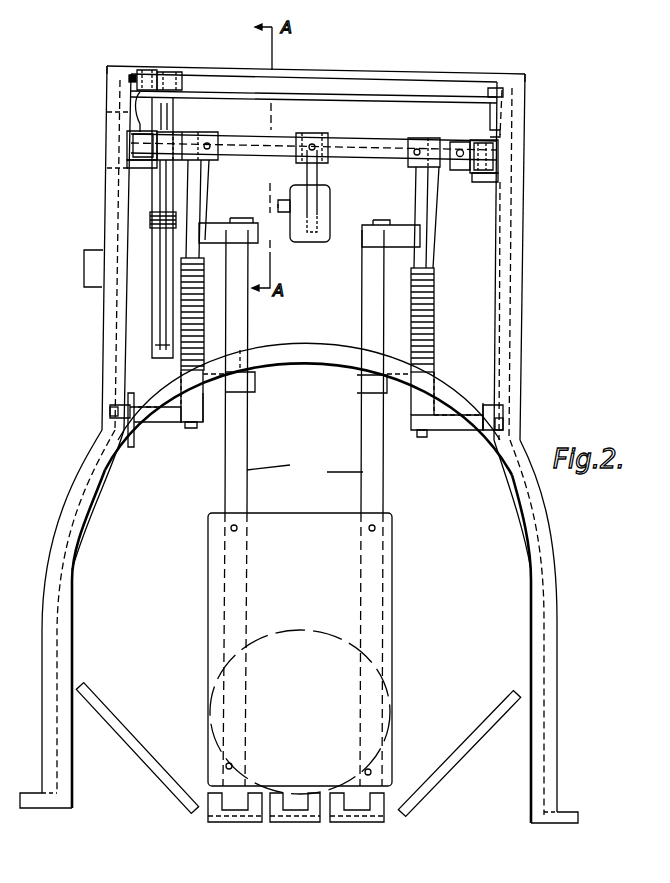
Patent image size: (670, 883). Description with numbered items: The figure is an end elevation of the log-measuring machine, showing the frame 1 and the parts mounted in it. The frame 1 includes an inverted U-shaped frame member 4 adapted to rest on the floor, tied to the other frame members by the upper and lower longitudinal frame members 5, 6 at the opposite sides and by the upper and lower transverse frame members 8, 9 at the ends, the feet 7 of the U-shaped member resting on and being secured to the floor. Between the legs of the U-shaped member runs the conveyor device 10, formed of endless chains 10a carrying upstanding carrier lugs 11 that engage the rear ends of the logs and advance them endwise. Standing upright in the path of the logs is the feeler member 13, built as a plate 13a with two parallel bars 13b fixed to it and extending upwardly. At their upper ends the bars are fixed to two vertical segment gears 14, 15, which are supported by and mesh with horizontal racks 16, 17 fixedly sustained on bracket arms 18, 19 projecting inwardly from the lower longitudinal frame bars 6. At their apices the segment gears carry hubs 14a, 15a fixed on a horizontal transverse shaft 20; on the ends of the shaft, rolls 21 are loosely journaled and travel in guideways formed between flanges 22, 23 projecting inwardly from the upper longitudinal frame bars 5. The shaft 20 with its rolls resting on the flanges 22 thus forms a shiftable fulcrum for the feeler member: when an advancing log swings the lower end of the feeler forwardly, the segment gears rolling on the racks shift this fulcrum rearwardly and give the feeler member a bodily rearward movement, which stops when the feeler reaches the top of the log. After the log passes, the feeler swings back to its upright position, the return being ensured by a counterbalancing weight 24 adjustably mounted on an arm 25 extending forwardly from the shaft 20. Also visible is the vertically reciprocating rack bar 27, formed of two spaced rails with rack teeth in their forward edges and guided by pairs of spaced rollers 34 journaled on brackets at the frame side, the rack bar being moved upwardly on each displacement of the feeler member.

The frame 1 is at (328, 229).
The inverted U-shaped frame member 4 is at (301, 626).
The upper longitudinal frame member 5 is at (115, 129).
The lower longitudinal frame member 6 is at (101, 417).
The feet 7 is at (48, 684).
The upper transverse frame member 8 is at (314, 79).
The lower transverse frame member 9 is at (308, 397).
The conveyor device 10 is at (295, 822).
The endless chain 10a is at (217, 823).
The carrier lug 11 is at (208, 802).
The feeler member 13 is at (309, 365).
The plate 13a is at (300, 653).
The parallel bar 13b is at (305, 472).
The segment gear 14 is at (198, 304).
The hub 14a is at (200, 140).
The segment gear 15 is at (436, 290).
The hub 15a is at (432, 138).
The rack 16 is at (203, 396).
The rack 17 is at (410, 405).
The bracket arm 18 is at (170, 418).
The bracket arm 19 is at (450, 431).
The transverse shaft 20 is at (369, 148).
The roll 21 is at (143, 148).
The flange 22 is at (138, 110).
The flange 23 is at (147, 163).
The counterbalancing weight 24 is at (328, 209).
The arm 25 is at (318, 171).
The rack bar 27 is at (148, 240).
The lower pair of spaced rollers 34 is at (150, 208).